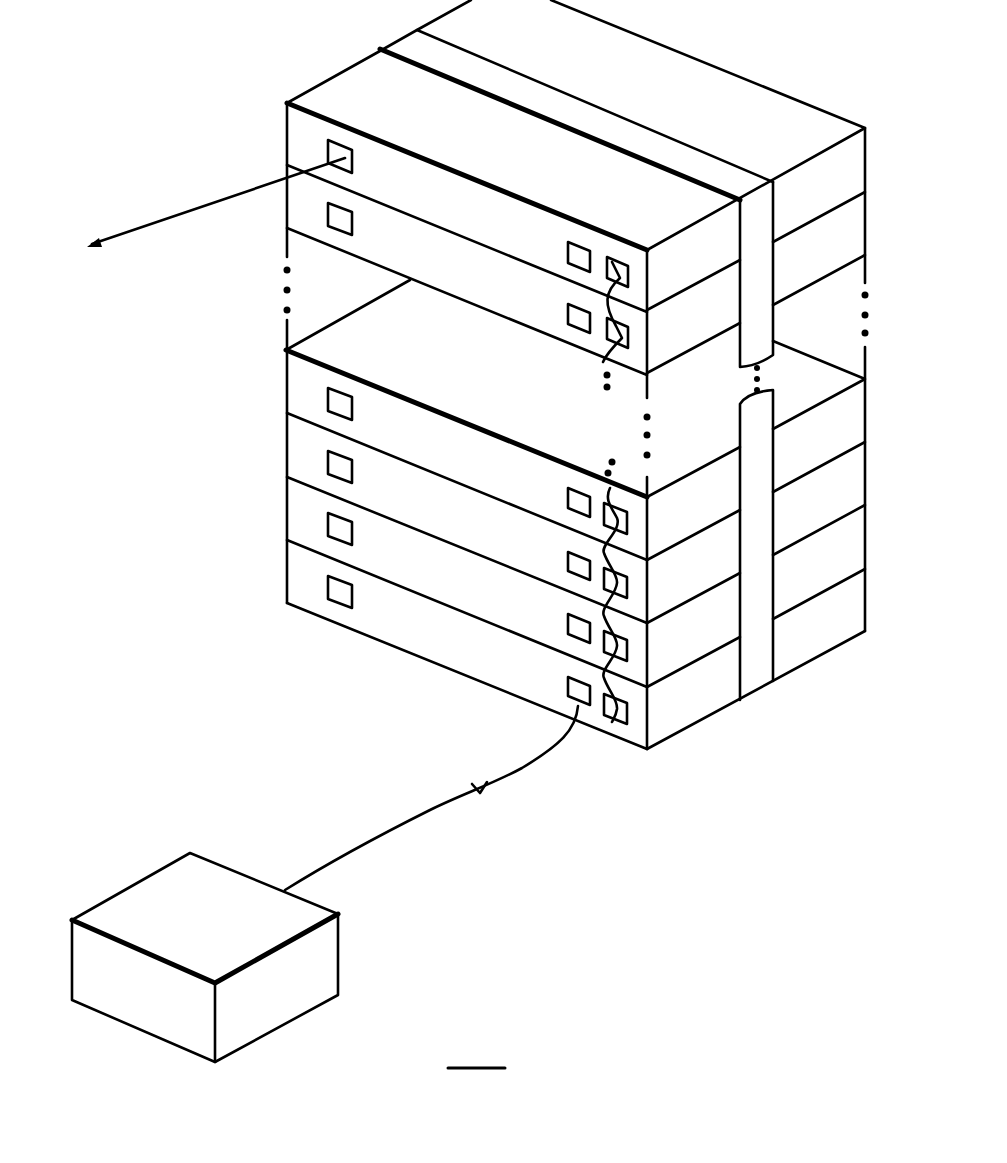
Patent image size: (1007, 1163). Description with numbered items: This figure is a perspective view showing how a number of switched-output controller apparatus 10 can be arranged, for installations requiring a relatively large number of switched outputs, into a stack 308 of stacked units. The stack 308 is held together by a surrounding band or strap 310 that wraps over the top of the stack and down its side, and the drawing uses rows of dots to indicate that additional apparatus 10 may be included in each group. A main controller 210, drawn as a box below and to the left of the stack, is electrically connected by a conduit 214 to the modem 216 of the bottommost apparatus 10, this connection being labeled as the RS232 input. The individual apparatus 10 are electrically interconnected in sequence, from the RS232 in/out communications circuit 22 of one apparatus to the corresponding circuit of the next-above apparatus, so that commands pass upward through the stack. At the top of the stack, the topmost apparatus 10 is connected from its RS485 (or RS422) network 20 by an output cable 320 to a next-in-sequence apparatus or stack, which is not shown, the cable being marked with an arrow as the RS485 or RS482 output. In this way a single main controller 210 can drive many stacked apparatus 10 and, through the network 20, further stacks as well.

The stack 308 is at (855, 92).
The switched-output controller apparatus 10 is at (865, 155).
The RS485 network 20 is at (328, 148).
The RS232 in/out communications circuit 22 is at (628, 272).
The surrounding band or strap 310 is at (518, 77).
The output cable 320 is at (200, 208).
The modem 216 is at (565, 690).
The conduit 214 is at (352, 848).
The main controller 210 is at (333, 963).